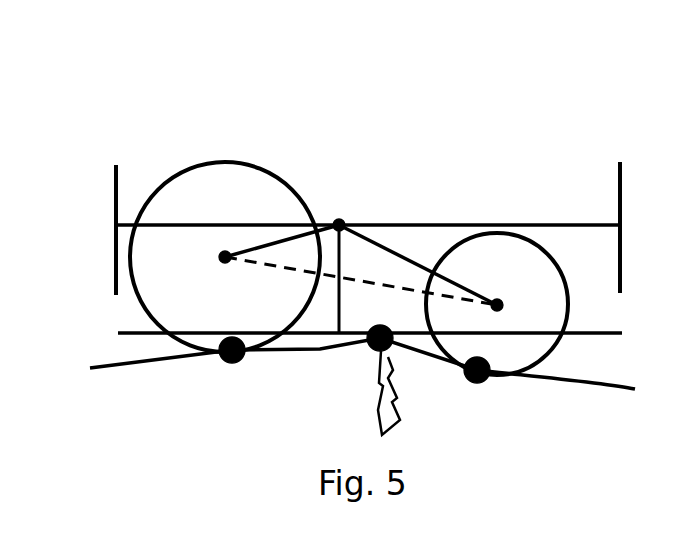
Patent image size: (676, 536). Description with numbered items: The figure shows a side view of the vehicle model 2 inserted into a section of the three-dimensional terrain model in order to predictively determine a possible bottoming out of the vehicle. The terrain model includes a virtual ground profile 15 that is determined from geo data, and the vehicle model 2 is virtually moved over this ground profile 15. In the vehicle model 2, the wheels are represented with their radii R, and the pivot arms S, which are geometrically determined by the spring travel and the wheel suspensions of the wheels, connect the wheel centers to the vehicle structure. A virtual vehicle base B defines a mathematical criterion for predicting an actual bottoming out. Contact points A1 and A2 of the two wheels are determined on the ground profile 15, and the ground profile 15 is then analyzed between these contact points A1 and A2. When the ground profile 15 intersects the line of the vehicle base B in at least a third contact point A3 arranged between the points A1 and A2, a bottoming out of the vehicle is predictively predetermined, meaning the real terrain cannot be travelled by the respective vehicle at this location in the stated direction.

The vehicle model 2 is at (138, 151).
The radius of the vehicle wheel R is at (220, 190).
The pivot arm S is at (270, 240).
The virtual vehicle base B is at (135, 333).
The virtual ground profile 15 is at (110, 367).
The contact point A1 is at (236, 374).
The contact point A2 is at (483, 390).
The third contact point A3 is at (368, 380).